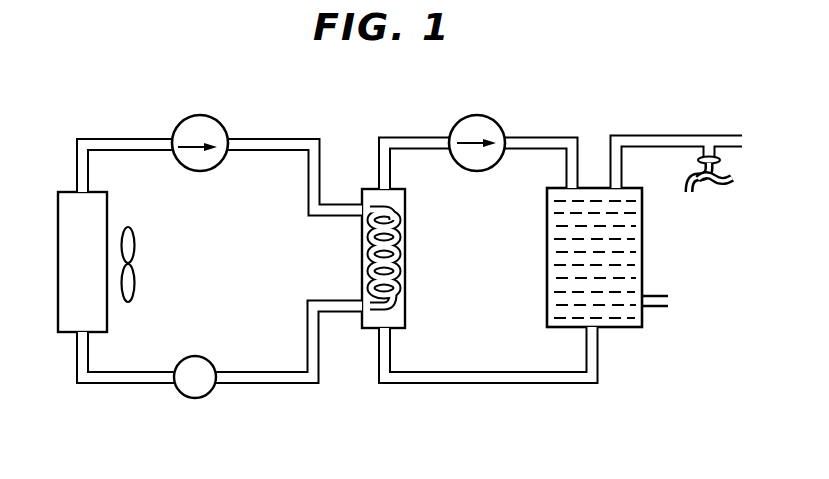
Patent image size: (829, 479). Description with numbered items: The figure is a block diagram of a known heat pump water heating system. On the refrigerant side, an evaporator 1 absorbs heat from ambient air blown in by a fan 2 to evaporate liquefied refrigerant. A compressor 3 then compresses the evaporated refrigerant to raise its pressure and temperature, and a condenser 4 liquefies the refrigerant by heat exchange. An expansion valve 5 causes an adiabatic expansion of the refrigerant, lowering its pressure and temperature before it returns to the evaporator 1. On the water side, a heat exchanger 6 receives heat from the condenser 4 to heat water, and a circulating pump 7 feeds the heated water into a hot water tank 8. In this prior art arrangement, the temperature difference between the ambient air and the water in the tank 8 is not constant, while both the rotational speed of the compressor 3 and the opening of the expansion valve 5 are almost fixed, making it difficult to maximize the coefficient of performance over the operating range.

The evaporator 1 is at (58, 219).
The fan 2 is at (131, 229).
The compressor 3 is at (224, 128).
The condenser 4 is at (362, 244).
The expansion valve 5 is at (207, 395).
The heat exchanger 6 is at (405, 244).
The circulating pump 7 is at (499, 128).
The hot water tank 8 is at (630, 242).